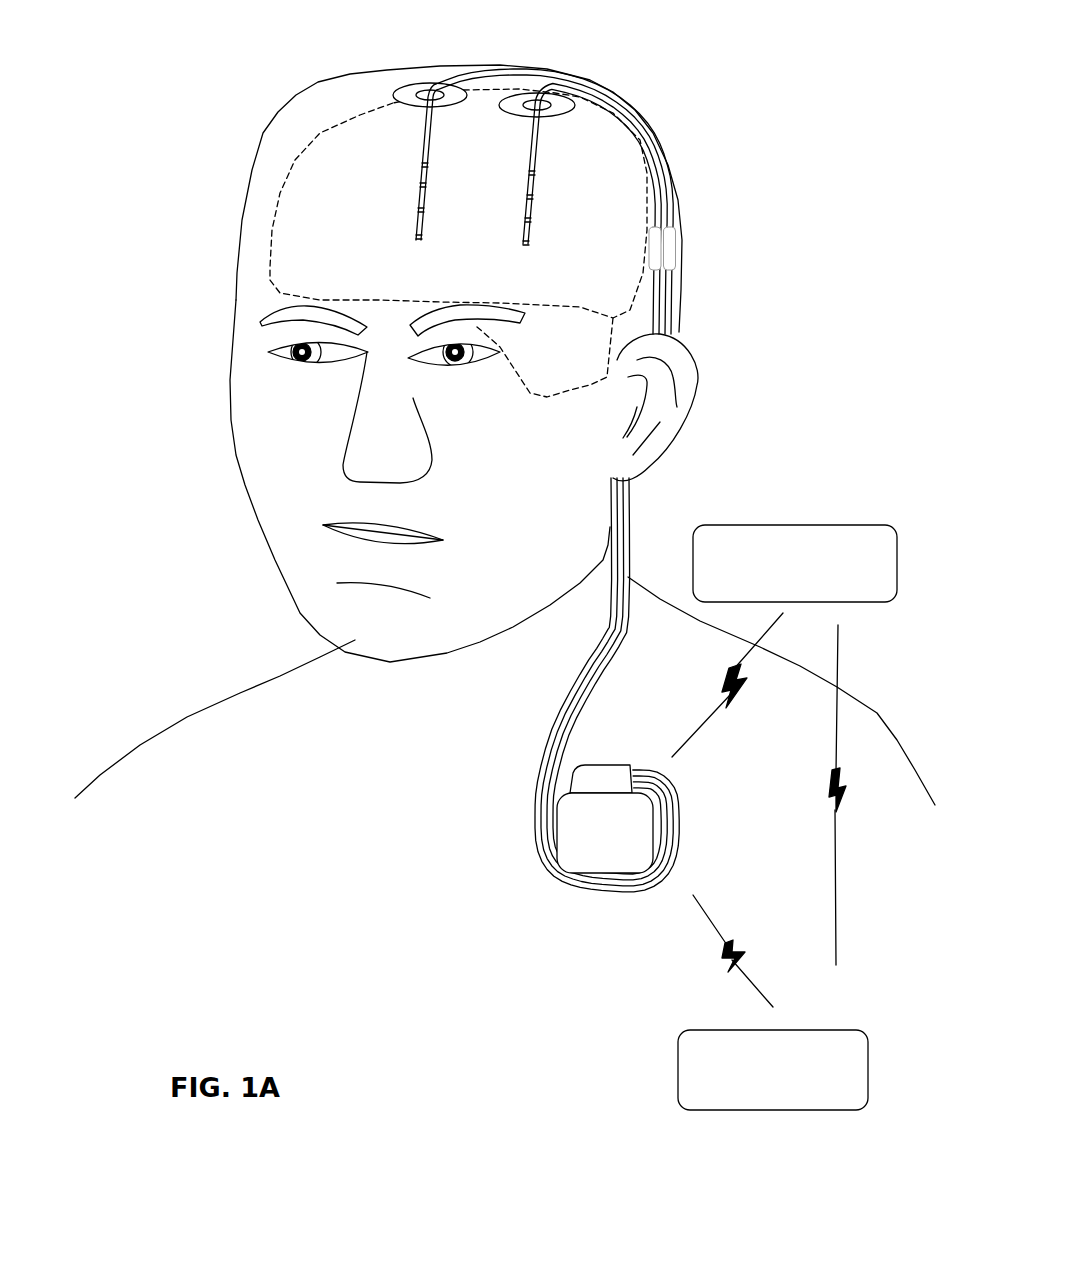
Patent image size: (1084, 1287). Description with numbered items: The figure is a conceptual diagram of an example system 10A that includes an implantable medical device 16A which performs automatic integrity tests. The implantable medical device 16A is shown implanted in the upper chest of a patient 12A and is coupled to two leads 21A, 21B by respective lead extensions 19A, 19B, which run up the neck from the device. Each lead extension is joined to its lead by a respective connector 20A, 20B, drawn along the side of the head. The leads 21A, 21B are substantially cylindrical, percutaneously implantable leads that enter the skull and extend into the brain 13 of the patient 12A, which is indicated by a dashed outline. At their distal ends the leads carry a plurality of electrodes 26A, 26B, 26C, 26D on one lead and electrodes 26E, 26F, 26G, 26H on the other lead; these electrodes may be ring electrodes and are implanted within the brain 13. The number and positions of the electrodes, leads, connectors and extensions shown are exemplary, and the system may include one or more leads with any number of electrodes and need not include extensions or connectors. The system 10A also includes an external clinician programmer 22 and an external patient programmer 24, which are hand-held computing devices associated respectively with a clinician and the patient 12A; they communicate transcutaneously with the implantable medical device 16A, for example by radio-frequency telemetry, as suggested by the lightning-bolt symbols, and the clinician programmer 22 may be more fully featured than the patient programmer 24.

The system 10A is at (766, 105).
The patient 12A is at (187, 717).
The brain 13 is at (350, 107).
The implantable medical device 16A is at (657, 820).
The lead extension 19A is at (600, 681).
The lead extension 19B is at (577, 712).
The connector 20A is at (676, 248).
The connector 20B is at (655, 260).
The lead 21A is at (630, 119).
The lead 21B is at (652, 175).
The clinician programmer 22 is at (740, 525).
The patient programmer 24 is at (835, 1110).
The electrode 26A is at (421, 165).
The electrode 26B is at (420, 185).
The electrode 26C is at (418, 210).
The electrode 26D is at (416, 237).
The electrode 26E is at (531, 173).
The electrode 26F is at (529, 197).
The electrode 26G is at (527, 221).
The electrode 26H is at (524, 243).